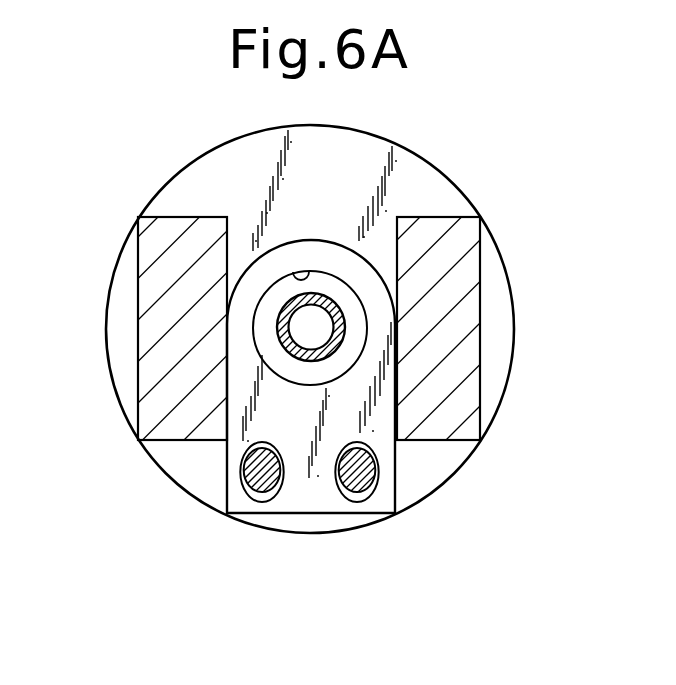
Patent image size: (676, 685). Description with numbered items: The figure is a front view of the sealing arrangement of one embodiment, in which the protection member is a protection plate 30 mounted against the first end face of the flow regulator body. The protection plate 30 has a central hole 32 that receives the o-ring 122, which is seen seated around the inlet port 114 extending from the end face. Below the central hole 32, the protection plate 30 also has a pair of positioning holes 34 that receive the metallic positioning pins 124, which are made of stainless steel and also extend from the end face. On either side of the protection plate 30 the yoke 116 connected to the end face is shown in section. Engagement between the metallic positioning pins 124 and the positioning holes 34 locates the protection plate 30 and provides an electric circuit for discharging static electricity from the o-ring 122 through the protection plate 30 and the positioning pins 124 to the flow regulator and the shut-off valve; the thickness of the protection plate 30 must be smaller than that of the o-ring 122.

The protection plate 30 is at (385, 485).
The central hole 32 is at (308, 278).
The positioning holes 34 is at (255, 497).
The inlet port 114 is at (282, 317).
The yoke 116 is at (152, 365).
The o-ring 122 is at (345, 297).
The positioning pins 124 is at (253, 473).